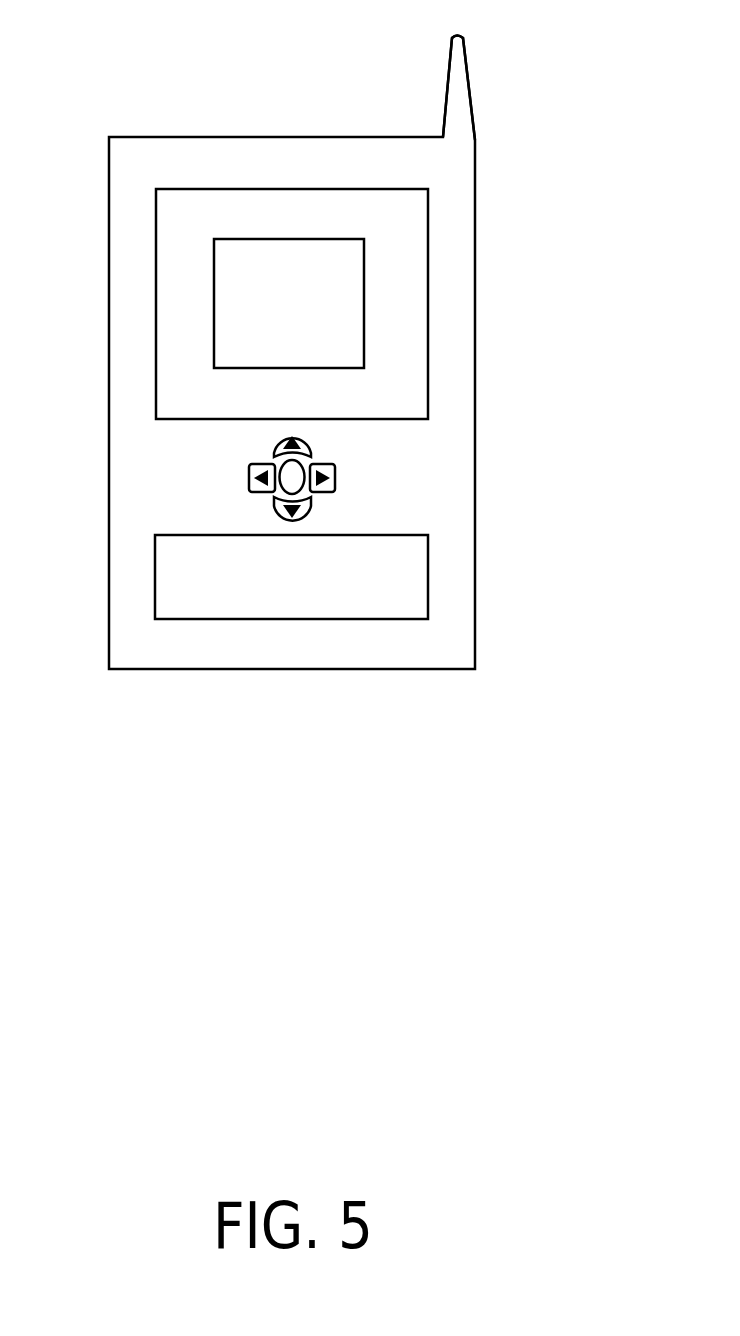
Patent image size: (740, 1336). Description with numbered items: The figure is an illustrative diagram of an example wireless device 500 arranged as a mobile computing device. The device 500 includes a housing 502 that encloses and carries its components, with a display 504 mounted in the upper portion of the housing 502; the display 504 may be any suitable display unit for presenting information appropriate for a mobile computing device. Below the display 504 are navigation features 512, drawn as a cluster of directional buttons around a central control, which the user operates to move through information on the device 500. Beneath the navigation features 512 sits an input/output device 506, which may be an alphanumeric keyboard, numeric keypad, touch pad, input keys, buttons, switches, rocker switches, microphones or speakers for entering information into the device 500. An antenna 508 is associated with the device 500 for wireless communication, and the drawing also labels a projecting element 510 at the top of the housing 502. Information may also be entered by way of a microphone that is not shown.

The device 500 is at (124, 54).
The housing 502 is at (479, 404).
The display 504 is at (433, 213).
The input/output (I/O) device 506 is at (435, 570).
The antenna 508 is at (374, 322).
The antenna 510 is at (445, 79).
The navigation features 512 is at (340, 479).